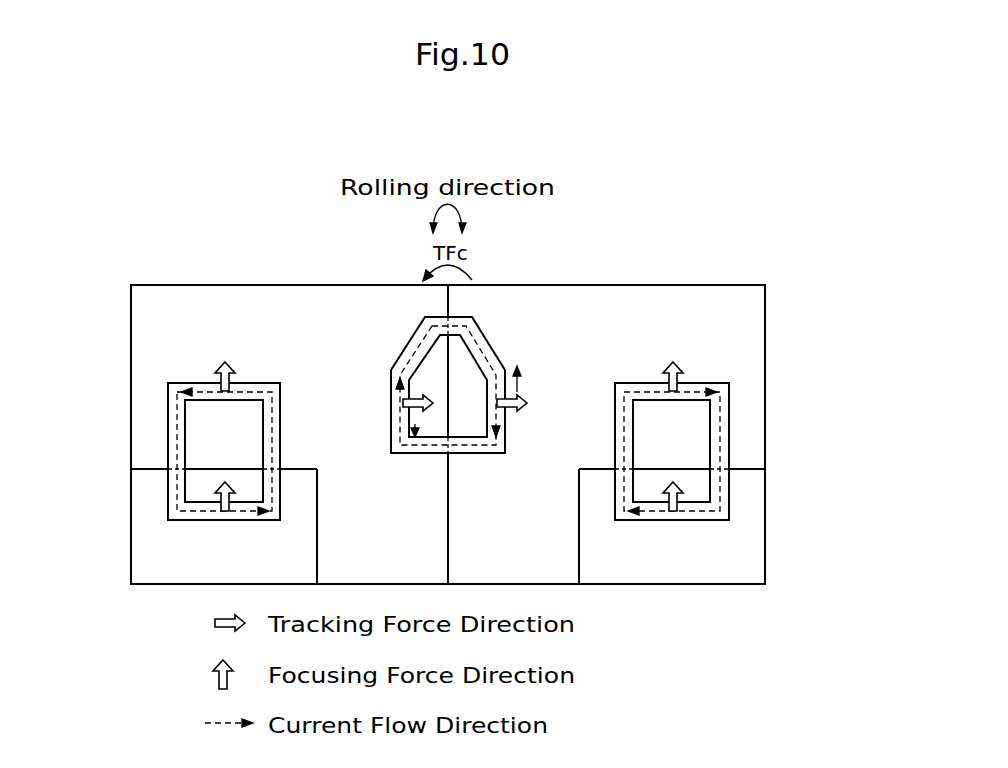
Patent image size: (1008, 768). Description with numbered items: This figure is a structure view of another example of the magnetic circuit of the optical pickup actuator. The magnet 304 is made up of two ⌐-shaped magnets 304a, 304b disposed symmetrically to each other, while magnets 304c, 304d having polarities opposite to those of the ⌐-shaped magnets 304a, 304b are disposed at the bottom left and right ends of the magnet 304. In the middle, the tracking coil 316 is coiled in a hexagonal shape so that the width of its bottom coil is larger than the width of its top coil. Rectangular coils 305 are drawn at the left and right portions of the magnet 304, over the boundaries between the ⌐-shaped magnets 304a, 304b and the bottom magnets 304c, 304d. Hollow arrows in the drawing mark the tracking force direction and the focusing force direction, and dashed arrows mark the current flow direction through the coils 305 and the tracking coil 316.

The magnet 304 is at (777, 267).
The ⌐-shaped magnet 304a is at (243, 305).
The ⌐-shaped magnet 304b is at (660, 307).
The magnet 304c is at (143, 537).
The magnet 304d is at (740, 543).
The focusing coil 305 is at (178, 443).
The tracking coil 316 is at (477, 343).